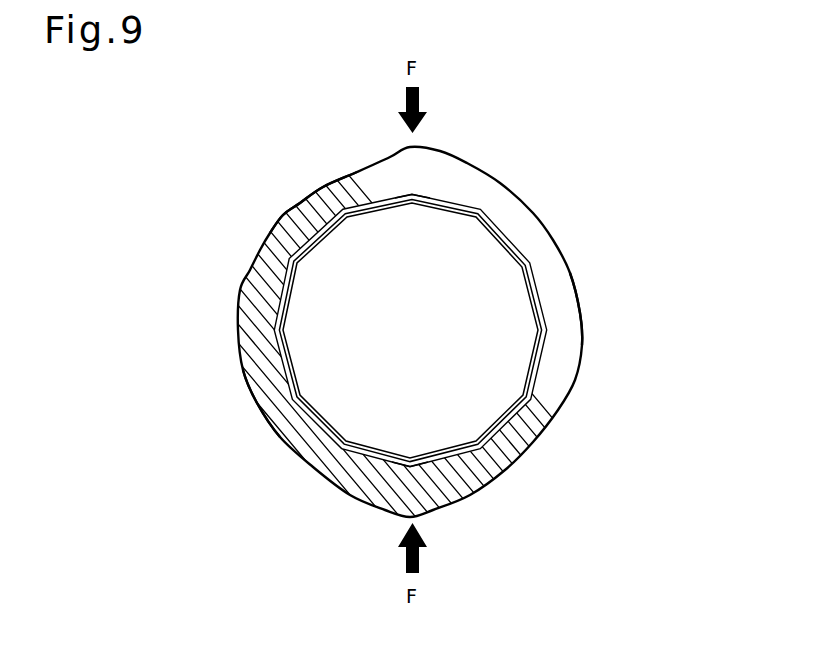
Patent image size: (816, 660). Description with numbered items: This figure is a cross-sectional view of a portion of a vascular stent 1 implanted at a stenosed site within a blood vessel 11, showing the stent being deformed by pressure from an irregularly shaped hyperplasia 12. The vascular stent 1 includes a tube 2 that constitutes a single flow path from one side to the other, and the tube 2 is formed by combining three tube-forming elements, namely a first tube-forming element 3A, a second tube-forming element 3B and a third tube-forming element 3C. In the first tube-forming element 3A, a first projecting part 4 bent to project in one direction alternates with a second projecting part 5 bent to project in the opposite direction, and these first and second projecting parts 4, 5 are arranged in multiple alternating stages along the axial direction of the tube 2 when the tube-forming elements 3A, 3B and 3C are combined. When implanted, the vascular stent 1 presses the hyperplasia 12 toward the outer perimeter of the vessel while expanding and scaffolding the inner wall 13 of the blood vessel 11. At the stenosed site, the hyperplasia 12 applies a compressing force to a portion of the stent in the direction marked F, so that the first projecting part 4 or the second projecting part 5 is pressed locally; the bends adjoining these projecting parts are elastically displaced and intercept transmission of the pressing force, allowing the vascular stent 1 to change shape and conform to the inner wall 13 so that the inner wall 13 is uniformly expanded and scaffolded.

The vascular stent 1 is at (358, 343).
The tube 2 is at (297, 413).
The first tube-forming element 3A is at (289, 215).
The second tube-forming element 3B is at (270, 362).
The third tube-forming element 3C is at (547, 303).
The first projecting part 4 is at (289, 328).
The second projecting part 5 is at (284, 266).
The blood vessel having a stenosed site 11 is at (477, 170).
The hyperplasia 12 is at (430, 208).
The inner wall 13 is at (500, 244).